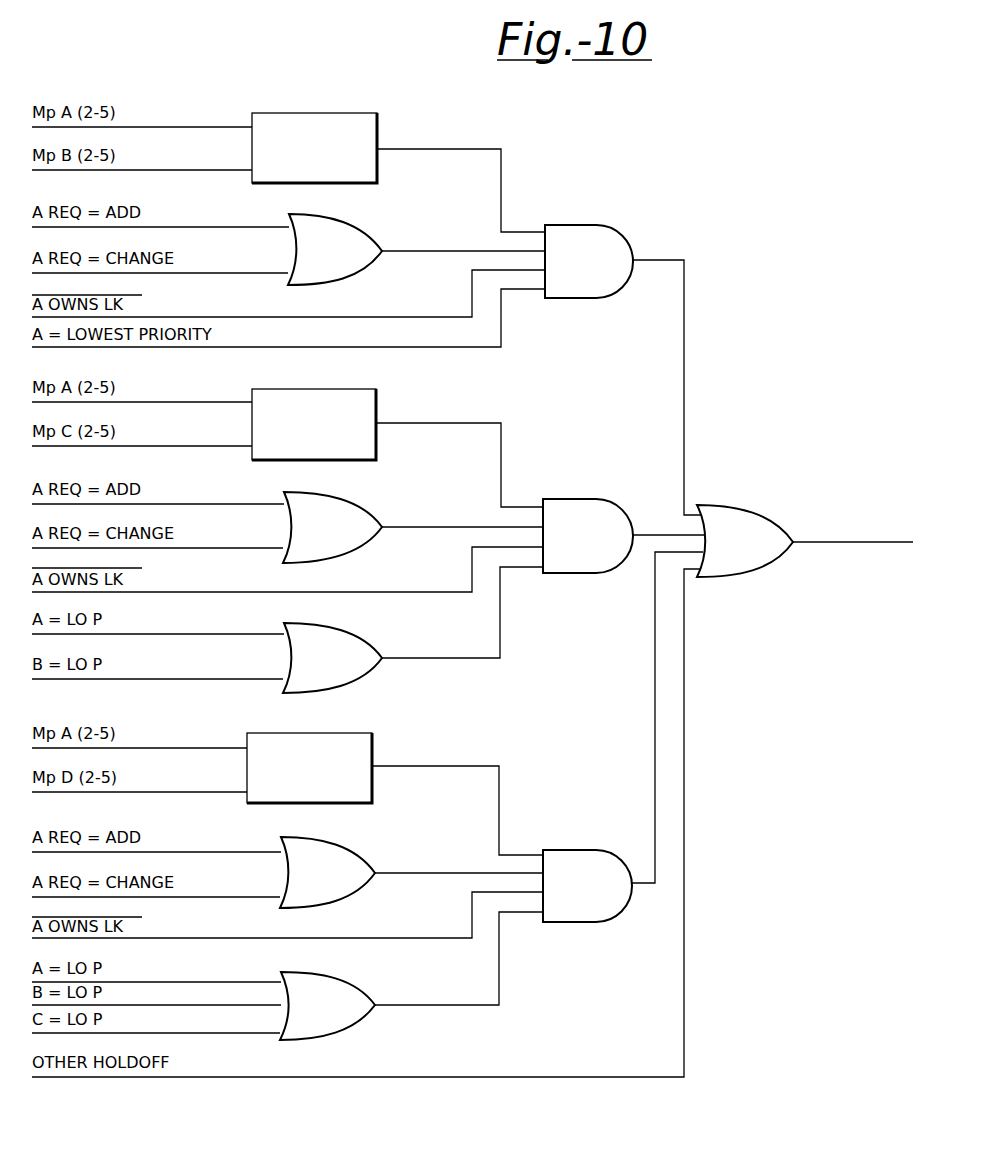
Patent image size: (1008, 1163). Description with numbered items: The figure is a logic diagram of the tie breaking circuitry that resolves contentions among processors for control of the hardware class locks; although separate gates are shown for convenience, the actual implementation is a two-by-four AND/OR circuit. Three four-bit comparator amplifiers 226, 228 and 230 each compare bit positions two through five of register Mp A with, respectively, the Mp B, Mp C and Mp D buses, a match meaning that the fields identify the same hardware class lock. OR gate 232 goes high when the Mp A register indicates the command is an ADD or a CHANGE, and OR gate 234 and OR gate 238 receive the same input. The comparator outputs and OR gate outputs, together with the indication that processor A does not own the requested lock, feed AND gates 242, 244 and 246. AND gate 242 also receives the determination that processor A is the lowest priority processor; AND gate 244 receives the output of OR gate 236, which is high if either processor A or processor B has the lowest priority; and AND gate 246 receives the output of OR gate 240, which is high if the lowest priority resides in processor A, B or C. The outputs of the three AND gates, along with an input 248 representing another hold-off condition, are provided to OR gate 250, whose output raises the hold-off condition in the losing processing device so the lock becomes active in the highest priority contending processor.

The four-bit comparator amplifier 226 is at (353, 112).
The four-bit comparator amplifier 228 is at (377, 390).
The four-bit comparator amplifier 230 is at (373, 733).
The OR logic gate 232 is at (375, 235).
The OR logic gate 234 is at (367, 507).
The OR logic gate 236 is at (365, 638).
The OR logic gate 238 is at (362, 853).
The OR logic gate 240 is at (362, 987).
The AND logic gate 242 is at (620, 230).
The AND logic gate 244 is at (592, 498).
The AND logic gate 246 is at (568, 848).
The input representing another hold-off condition 248 is at (683, 978).
The OR logic gate 250 is at (738, 502).